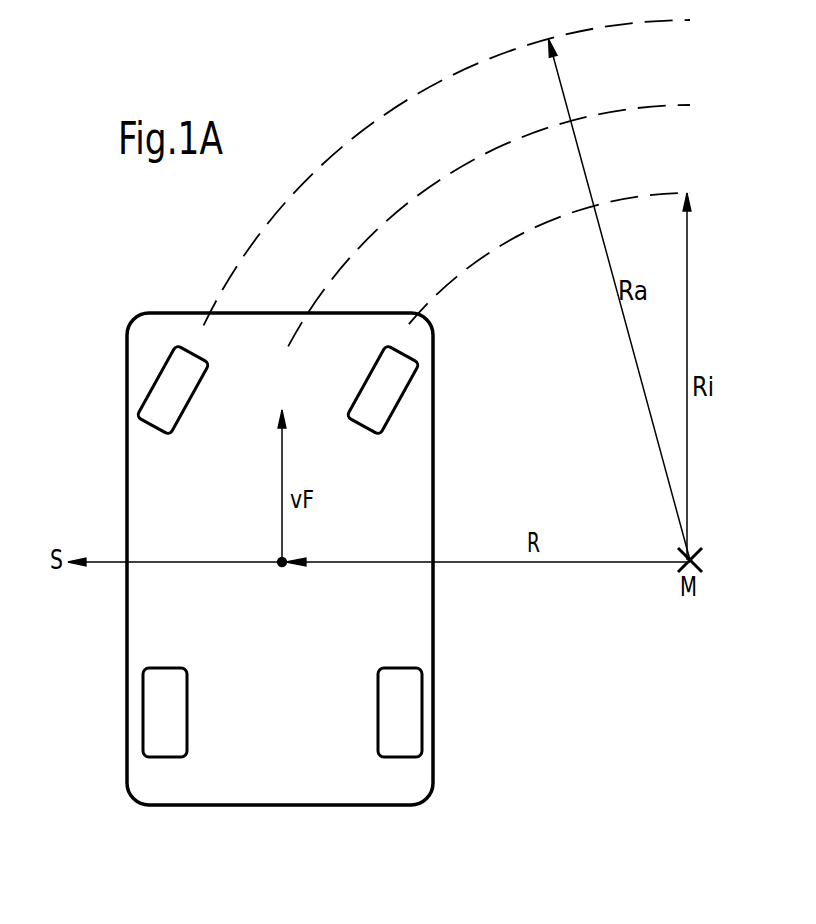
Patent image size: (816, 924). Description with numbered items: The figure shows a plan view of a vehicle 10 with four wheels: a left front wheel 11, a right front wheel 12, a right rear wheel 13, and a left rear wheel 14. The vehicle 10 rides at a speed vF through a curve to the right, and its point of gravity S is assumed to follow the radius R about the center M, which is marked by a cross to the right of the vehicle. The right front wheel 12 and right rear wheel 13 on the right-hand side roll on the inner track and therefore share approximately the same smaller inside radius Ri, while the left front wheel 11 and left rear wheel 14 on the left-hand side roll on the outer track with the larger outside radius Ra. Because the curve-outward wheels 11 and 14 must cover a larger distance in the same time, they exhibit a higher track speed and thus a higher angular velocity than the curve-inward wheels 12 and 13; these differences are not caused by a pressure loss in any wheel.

The vehicle 10 is at (145, 480).
The left front wheel 11 is at (167, 383).
The right front wheel 12 is at (397, 390).
The right rear wheel 13 is at (405, 712).
The left rear wheel 14 is at (160, 722).